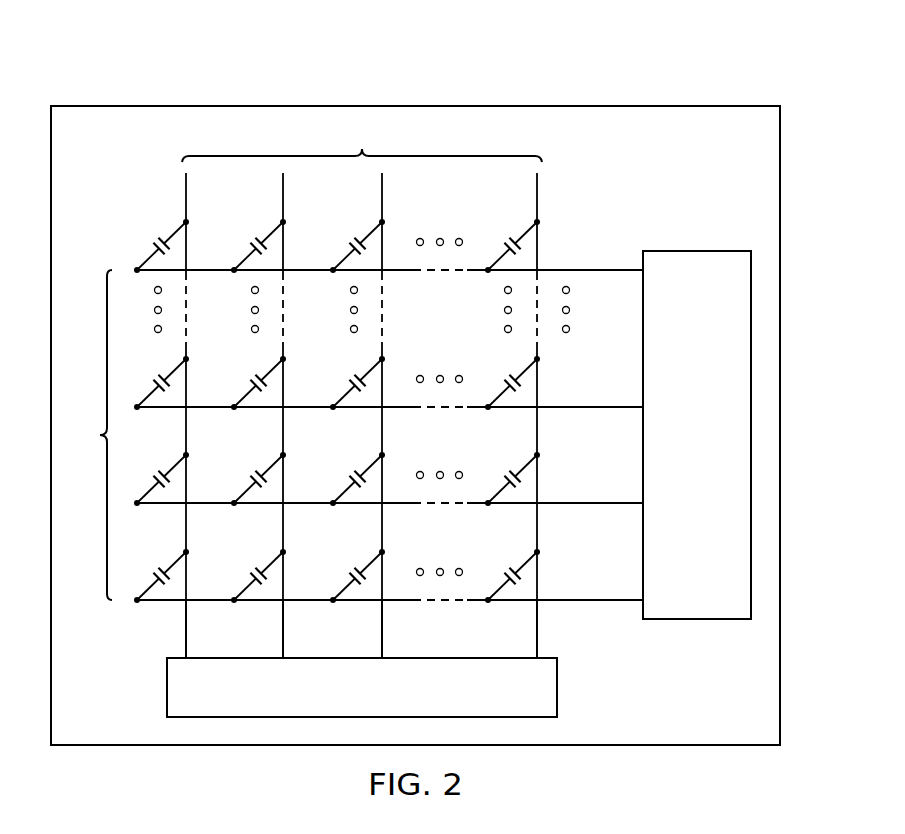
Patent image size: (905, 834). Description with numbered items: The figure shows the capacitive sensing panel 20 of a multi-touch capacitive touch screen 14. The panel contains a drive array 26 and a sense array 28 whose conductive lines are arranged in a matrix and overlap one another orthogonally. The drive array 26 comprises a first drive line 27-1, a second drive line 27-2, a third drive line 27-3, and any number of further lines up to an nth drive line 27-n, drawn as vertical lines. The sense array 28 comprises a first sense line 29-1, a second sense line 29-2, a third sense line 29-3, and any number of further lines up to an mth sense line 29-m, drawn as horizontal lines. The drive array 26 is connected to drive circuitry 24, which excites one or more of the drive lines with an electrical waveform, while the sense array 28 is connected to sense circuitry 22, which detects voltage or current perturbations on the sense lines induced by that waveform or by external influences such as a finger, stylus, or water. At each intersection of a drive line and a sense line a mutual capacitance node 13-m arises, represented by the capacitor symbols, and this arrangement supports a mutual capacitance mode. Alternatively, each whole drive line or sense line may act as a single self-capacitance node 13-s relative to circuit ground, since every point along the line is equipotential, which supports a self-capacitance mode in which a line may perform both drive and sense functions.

The multi-touch capacitive touch screen 14 is at (550, 63).
The capacitive sensing panel 20 is at (250, 102).
The sense circuitry 22 is at (709, 469).
The drive circuitry 24 is at (167, 688).
The drive array 26 is at (362, 143).
The sense array 28 is at (92, 435).
The first drive line 27-1 is at (186, 192).
The second drive line 27-2 is at (283, 192).
The third drive line 27-3 is at (382, 192).
The nth drive line 27-n is at (537, 192).
The first sense line 29-1 is at (590, 604).
The second sense line 29-2 is at (590, 507).
The third sense line 29-3 is at (590, 410).
The mth sense line 29-m is at (597, 273).
The mutual capacitance node 13-m is at (188, 266).
The self-capacitance node 13-s is at (642, 269).